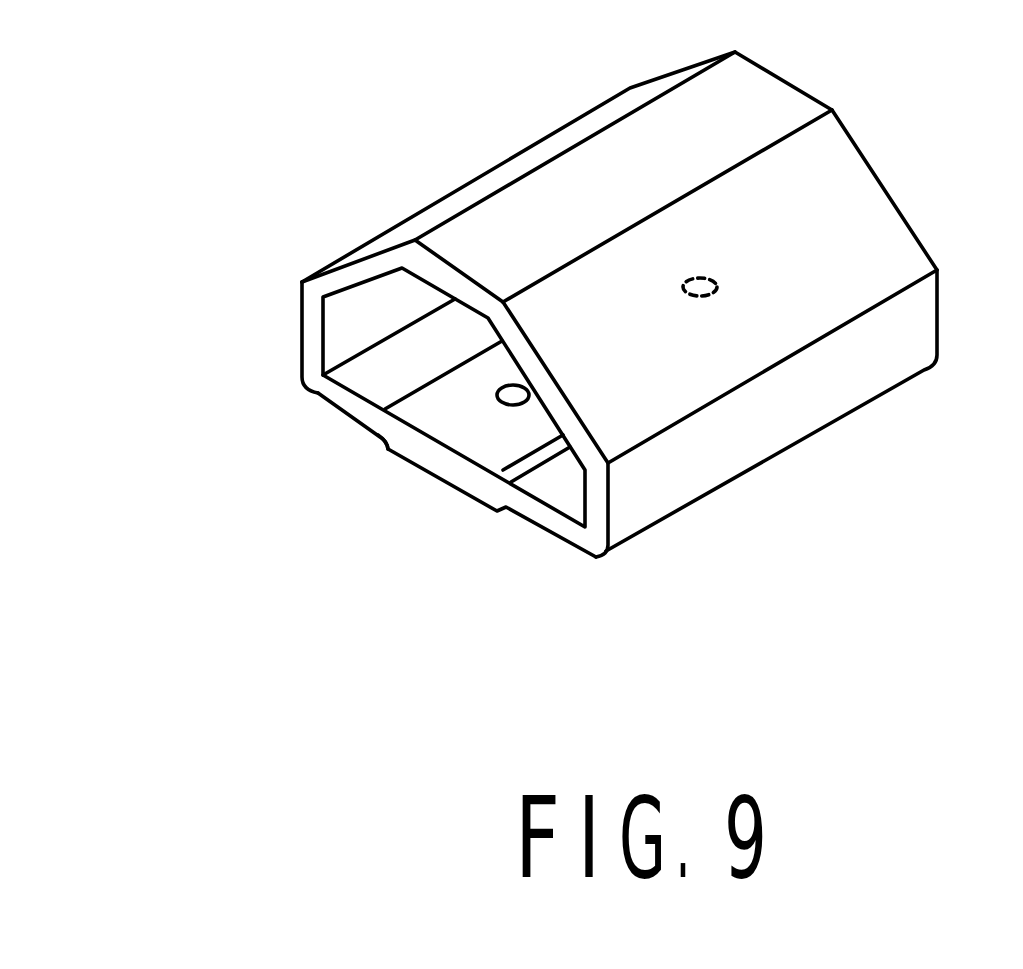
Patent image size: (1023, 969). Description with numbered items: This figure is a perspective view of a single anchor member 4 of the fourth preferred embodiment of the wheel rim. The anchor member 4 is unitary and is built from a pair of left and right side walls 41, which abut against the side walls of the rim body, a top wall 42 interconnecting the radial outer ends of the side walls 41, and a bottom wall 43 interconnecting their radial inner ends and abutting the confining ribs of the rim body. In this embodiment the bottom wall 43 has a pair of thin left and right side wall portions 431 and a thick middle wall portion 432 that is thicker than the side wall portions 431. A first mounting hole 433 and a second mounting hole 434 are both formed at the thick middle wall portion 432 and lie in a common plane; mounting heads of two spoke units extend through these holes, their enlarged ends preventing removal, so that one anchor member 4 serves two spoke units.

The anchor member 4 is at (487, 347).
The left and right side walls 41 is at (313, 335).
The top wall 42 is at (422, 267).
The bottom wall 43 is at (340, 401).
The thin left and right side wall portions 431 is at (370, 361).
The thick middle wall portion 432 is at (500, 400).
The first mounting hole 433 is at (412, 459).
The second mounting hole 434 is at (700, 290).